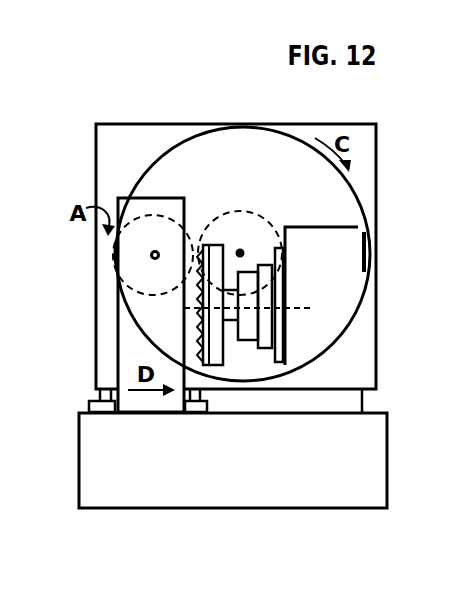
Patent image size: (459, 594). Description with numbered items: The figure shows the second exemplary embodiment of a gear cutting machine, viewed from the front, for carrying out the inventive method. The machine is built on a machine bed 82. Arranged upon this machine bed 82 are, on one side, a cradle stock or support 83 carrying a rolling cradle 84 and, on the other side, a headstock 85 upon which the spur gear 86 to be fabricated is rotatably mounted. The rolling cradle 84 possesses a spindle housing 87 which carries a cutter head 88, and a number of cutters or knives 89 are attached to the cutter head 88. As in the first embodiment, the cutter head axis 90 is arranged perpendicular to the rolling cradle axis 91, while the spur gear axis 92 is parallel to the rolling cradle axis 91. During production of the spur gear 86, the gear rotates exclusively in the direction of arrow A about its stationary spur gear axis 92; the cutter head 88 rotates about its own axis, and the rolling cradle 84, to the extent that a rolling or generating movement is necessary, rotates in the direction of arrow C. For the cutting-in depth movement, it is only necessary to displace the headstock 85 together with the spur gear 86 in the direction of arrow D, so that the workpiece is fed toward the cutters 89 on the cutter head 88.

The machine bed 82 is at (138, 496).
The cradle stock 83 is at (121, 134).
The rolling cradle 84 is at (260, 138).
The headstock 85 is at (132, 338).
The spur gear 86 is at (116, 262).
The spindle housing 87 is at (345, 263).
The cutter head 88 is at (215, 247).
The cutters 89 is at (199, 246).
The cutter head axis 90 is at (286, 307).
The rolling cradle axis 91 is at (241, 250).
The spur gear axis 92 is at (155, 257).